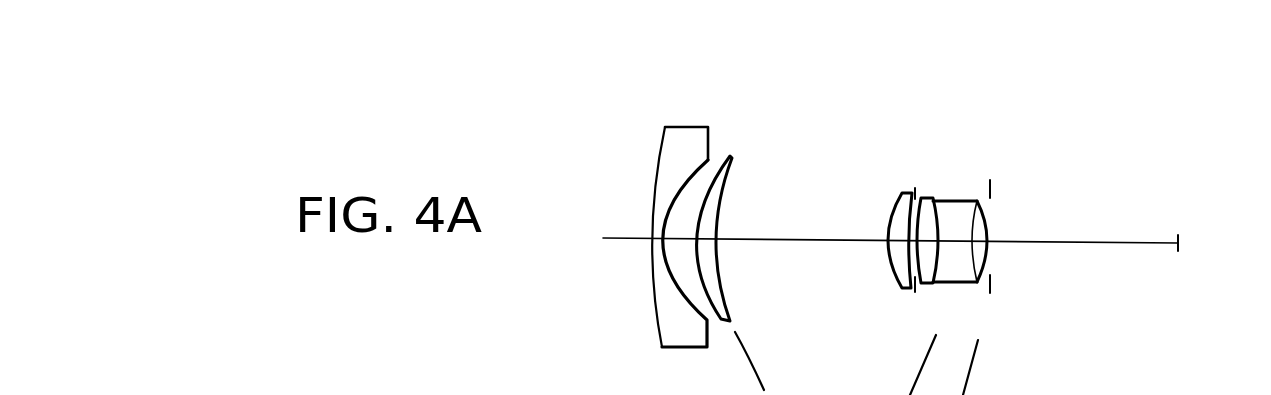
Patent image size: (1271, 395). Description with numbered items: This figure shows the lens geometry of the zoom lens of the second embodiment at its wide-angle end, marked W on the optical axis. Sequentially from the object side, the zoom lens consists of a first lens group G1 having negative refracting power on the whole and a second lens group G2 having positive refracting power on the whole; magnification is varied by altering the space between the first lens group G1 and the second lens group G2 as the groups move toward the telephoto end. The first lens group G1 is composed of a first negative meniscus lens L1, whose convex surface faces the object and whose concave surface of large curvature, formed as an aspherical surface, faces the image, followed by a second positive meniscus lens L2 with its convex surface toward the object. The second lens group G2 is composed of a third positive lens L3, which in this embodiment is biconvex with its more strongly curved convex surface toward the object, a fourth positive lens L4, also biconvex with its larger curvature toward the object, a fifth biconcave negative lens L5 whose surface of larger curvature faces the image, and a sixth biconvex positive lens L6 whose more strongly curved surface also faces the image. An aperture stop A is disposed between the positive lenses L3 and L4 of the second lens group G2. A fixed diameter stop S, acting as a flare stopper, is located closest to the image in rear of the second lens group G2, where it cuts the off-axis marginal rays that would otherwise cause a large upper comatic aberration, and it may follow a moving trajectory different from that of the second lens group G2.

The first lens group G1 is at (770, 72).
The second lens group G2 is at (1032, 93).
The first negative meniscus lens L1 is at (686, 137).
The second positive meniscus lens L2 is at (732, 153).
The third positive lens L3 is at (903, 193).
The fourth positive lens L4 is at (922, 197).
The fifth biconcave negative lens L5 is at (957, 201).
The sixth biconvex positive lens L6 is at (980, 200).
The aperture stop A is at (916, 190).
The fixed diameter stop S is at (991, 192).
The wide-angle end / image side W is at (919, 241).